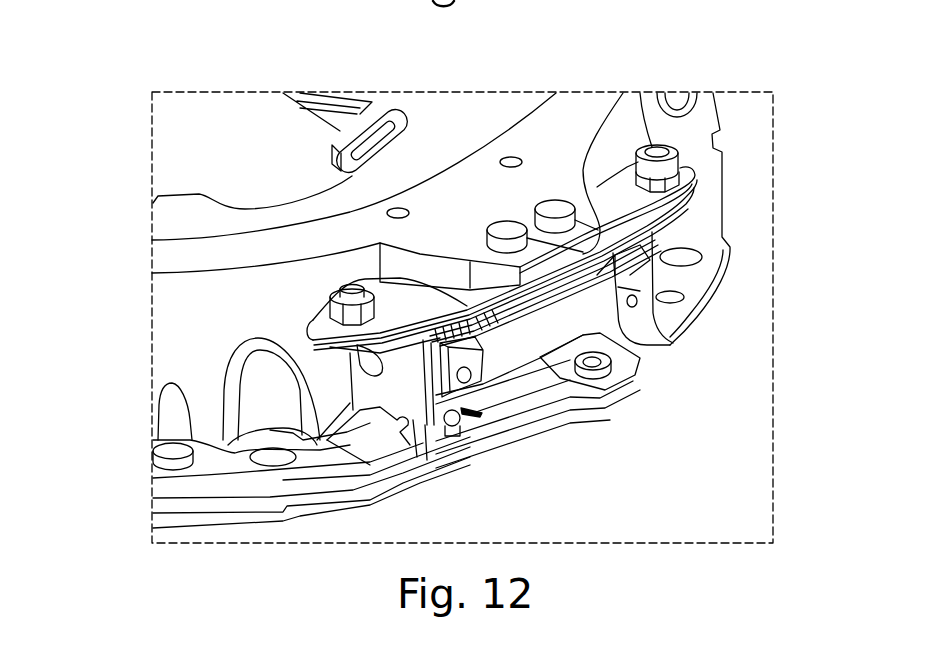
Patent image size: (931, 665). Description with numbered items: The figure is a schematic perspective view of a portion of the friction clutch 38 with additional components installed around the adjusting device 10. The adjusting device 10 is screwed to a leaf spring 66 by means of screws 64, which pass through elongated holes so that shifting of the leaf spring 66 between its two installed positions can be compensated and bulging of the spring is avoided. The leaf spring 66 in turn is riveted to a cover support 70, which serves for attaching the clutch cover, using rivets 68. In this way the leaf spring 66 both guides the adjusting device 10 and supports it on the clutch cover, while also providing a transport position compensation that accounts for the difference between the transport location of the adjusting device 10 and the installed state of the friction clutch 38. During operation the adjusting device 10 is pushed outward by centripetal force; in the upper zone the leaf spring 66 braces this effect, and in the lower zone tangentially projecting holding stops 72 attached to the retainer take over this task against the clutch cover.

The adjusting device 10 is at (655, 362).
The friction clutch 38 is at (130, 98).
The screws 64 is at (683, 170).
The leaf spring 66 is at (457, 295).
The rivets 68 is at (612, 276).
The cover support 70 is at (565, 117).
The holding stops 72 is at (448, 453).